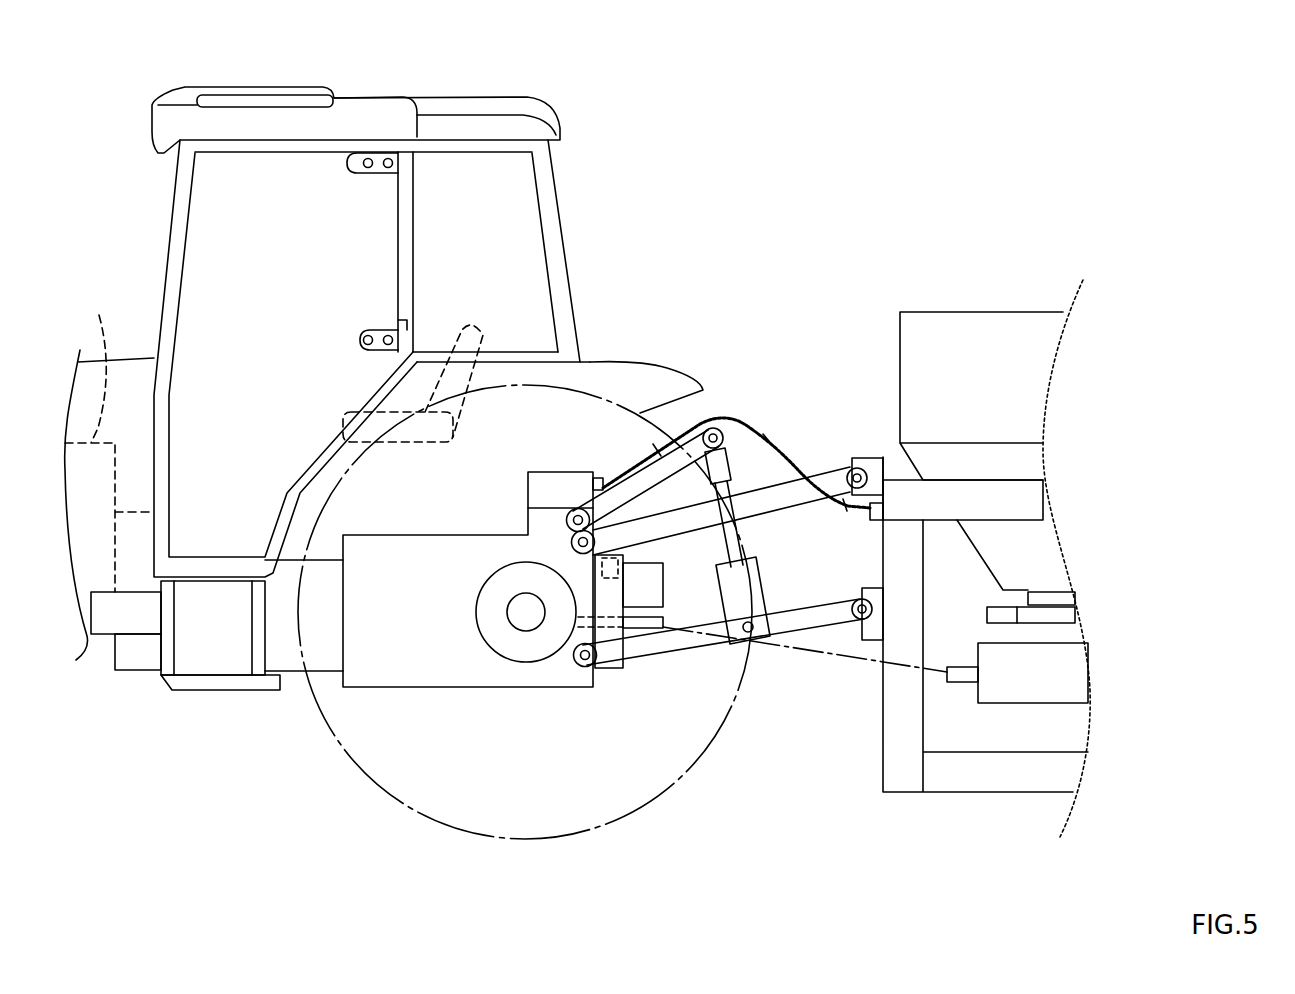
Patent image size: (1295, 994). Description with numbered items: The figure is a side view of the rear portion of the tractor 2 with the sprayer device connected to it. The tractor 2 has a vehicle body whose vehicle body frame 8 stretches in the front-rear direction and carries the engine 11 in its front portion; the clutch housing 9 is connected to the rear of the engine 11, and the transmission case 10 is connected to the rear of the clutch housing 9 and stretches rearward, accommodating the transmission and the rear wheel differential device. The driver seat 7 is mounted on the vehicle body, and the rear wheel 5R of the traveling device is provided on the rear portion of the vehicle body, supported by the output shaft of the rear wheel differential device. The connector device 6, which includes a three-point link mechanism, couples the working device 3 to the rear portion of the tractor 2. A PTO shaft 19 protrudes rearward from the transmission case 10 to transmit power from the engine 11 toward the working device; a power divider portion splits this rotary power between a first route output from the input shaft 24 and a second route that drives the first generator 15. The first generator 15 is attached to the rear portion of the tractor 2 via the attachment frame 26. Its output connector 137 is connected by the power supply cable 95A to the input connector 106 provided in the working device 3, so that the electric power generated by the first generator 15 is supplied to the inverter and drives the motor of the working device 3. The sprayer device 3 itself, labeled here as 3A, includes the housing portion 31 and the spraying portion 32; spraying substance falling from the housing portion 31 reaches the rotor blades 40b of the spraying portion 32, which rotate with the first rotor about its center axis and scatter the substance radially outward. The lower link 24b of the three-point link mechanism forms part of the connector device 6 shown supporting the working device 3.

The tractor 2 is at (555, 102).
The driver seat 7 is at (475, 323).
The vehicle body frame 8 is at (98, 636).
The clutch housing 9 is at (139, 670).
The engine 11 is at (108, 437).
The power supply cable 95A is at (610, 555).
The connector 137 is at (600, 568).
The rear wheel 5R is at (344, 749).
The transmission case 10 is at (390, 690).
The PTO shaft 19 is at (594, 602).
The attachment frame 26 is at (605, 600).
The first generator 15 is at (650, 587).
The input shaft 24 is at (640, 628).
The lower link 24b is at (730, 543).
The connector device 6 is at (693, 657).
The working device 3A is at (1012, 282).
The working device 3 is at (986, 517).
The housing portion 31 is at (963, 305).
The connector 106 is at (884, 522).
The spraying portion 32 is at (988, 602).
The rotor blade 40b is at (1067, 615).